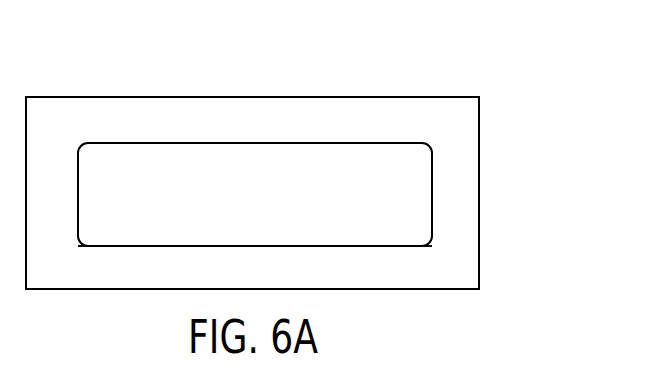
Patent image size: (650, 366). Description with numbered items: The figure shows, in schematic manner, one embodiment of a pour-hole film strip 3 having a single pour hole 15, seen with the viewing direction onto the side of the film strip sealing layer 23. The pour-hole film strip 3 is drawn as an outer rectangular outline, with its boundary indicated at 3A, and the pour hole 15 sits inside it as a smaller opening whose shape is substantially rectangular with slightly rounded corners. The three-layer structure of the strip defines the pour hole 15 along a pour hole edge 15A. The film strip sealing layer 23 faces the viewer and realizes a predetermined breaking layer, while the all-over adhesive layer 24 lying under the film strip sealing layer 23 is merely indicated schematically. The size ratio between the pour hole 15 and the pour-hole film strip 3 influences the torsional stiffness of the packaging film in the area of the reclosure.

The pour-hole film strip 3 is at (260, 88).
The edge of panel 3A is at (479, 163).
The film strip sealing layer 23 is at (83, 108).
The adhesive layer 24 is at (390, 113).
The pour hole 15 is at (226, 191).
The pour hole edge 15A is at (357, 143).